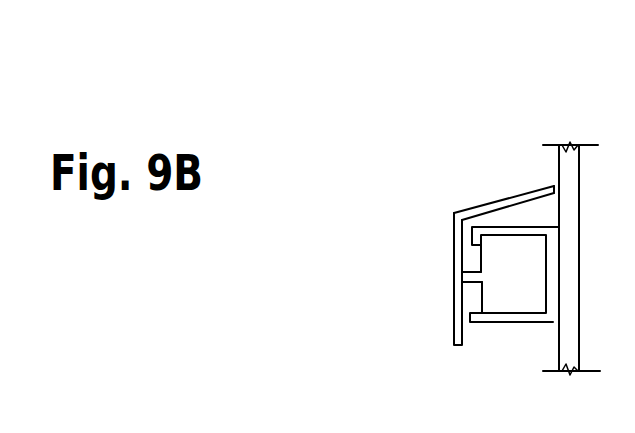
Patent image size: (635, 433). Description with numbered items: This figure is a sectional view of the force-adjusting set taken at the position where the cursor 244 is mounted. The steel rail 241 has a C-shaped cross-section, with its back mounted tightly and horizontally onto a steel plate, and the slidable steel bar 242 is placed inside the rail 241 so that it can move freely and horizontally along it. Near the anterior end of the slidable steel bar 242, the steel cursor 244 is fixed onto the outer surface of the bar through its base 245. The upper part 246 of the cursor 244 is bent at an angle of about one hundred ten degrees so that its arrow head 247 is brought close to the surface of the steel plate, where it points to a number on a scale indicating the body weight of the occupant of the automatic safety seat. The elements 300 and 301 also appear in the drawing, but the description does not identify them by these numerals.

The wall 300 is at (560, 147).
The flange tip / seam 301 is at (550, 184).
The arrow head 247 is at (550, 185).
The upper part 246 is at (486, 205).
The cursor 244 is at (479, 244).
The base 245 is at (480, 282).
The slidable steel bar 242 is at (428, 302).
The steel rail 241 is at (515, 325).